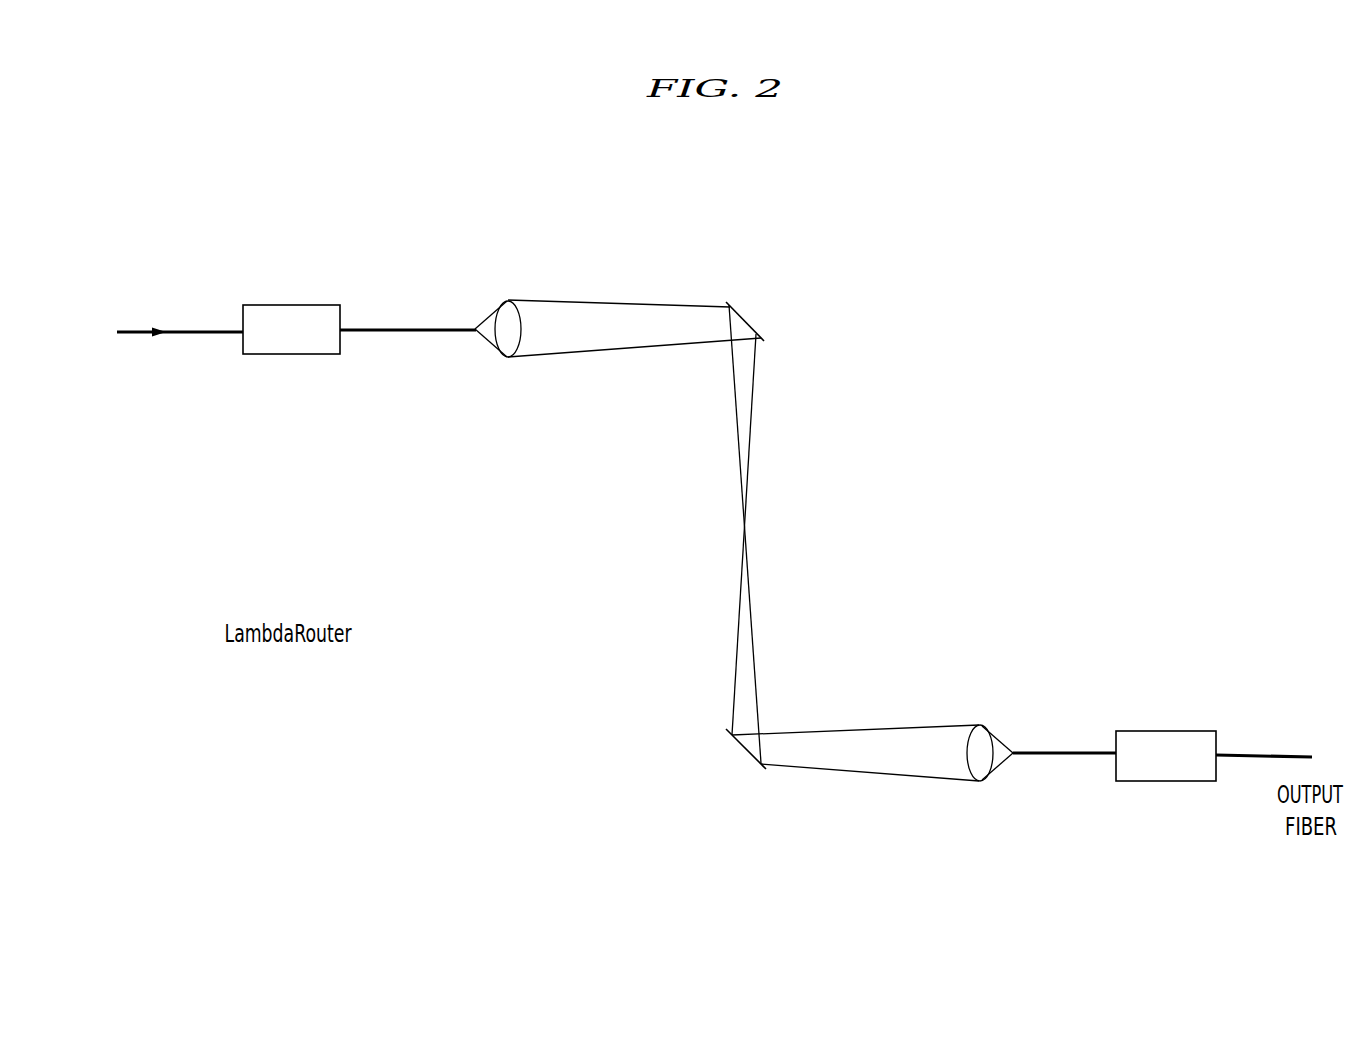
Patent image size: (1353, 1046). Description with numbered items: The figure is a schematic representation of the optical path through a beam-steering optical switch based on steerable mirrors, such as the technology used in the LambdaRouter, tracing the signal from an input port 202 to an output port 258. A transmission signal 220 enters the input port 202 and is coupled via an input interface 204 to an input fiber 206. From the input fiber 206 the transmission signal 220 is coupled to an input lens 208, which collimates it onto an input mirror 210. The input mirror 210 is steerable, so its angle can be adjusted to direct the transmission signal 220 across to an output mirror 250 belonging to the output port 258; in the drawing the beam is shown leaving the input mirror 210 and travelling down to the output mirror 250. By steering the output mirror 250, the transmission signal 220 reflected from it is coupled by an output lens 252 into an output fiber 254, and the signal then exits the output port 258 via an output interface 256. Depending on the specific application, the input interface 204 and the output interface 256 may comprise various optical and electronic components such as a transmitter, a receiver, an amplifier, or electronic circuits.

The input port 202 is at (428, 196).
The input interface 204 is at (291, 384).
The input fiber 206 is at (406, 325).
The input lens 208 is at (505, 382).
The input mirror 210 is at (767, 530).
The transmission signal 220 is at (164, 368).
The output mirror 250 is at (700, 752).
The output lens 252 is at (984, 699).
The output fiber 254 is at (1065, 755).
The output interface 256 is at (1166, 701).
The output port 258 is at (1295, 568).